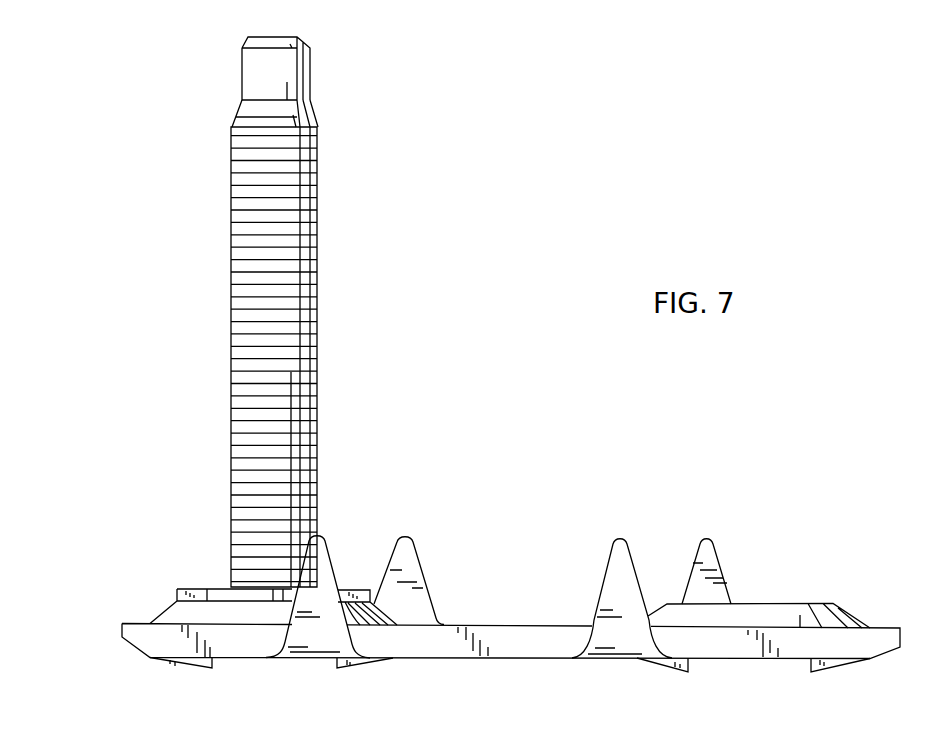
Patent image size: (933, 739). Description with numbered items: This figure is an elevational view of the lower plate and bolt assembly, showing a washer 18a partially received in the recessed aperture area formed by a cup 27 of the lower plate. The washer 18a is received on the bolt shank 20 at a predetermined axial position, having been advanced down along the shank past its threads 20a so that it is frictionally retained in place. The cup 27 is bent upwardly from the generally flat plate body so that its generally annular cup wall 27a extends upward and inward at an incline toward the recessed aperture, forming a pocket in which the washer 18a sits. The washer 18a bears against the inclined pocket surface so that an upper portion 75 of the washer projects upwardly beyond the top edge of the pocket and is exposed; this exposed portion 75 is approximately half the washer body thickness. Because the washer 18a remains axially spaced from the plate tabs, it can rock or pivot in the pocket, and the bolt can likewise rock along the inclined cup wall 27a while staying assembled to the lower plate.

The bolt shank 20 is at (349, 312).
The threads 20a is at (317, 423).
The washer 18a is at (211, 566).
The upper portion of the washer 75 is at (370, 589).
The cup 27 is at (163, 604).
The cup wall 27a is at (845, 621).